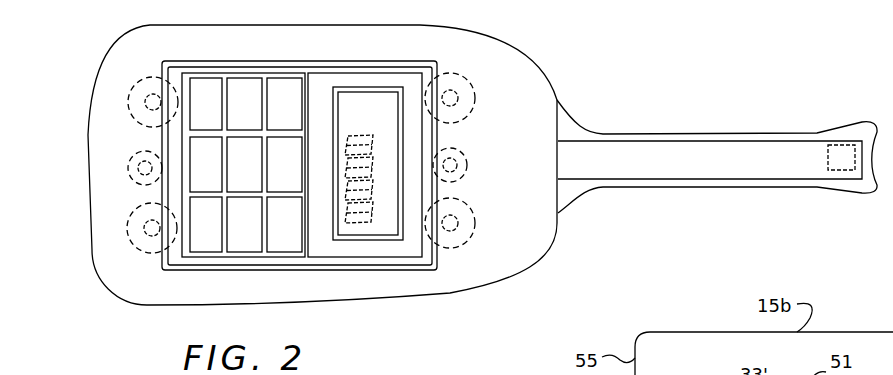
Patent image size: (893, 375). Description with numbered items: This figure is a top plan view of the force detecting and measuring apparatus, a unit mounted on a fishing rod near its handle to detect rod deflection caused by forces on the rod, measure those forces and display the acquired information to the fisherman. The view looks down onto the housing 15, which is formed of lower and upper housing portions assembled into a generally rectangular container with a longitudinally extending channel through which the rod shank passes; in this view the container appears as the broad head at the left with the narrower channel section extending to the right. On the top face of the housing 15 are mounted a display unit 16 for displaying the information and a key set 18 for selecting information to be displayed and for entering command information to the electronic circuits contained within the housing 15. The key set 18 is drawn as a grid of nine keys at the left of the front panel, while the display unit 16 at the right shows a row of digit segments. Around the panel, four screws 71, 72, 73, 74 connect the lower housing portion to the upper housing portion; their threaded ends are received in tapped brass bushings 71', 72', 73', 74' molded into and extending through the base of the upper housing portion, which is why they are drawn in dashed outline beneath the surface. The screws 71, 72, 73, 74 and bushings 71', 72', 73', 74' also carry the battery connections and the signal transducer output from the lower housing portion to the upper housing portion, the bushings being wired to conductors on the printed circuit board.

The housing 15 is at (520, 72).
The display unit 16 is at (380, 213).
The key set 18 is at (272, 223).
The screw 71 is at (473, 242).
The tapped brass bushing 71' is at (470, 223).
The screw 72 is at (113, 237).
The tapped brass bushing 72' is at (101, 220).
The screw 73 is at (460, 89).
The tapped brass bushing 73' is at (479, 116).
The screw 74 is at (112, 114).
The tapped brass bushing 74' is at (112, 70).